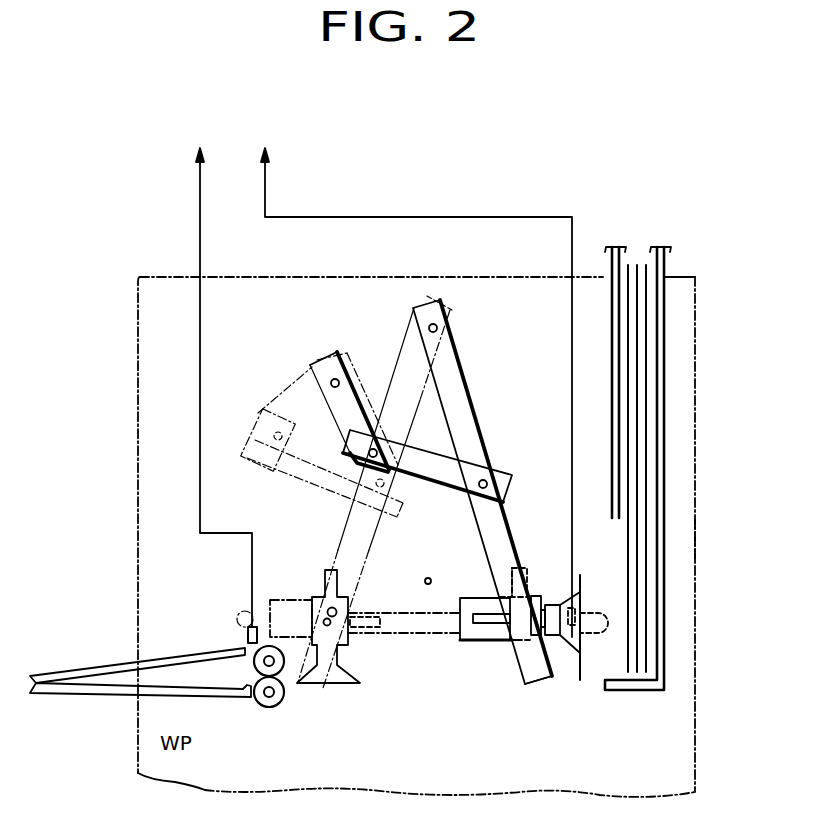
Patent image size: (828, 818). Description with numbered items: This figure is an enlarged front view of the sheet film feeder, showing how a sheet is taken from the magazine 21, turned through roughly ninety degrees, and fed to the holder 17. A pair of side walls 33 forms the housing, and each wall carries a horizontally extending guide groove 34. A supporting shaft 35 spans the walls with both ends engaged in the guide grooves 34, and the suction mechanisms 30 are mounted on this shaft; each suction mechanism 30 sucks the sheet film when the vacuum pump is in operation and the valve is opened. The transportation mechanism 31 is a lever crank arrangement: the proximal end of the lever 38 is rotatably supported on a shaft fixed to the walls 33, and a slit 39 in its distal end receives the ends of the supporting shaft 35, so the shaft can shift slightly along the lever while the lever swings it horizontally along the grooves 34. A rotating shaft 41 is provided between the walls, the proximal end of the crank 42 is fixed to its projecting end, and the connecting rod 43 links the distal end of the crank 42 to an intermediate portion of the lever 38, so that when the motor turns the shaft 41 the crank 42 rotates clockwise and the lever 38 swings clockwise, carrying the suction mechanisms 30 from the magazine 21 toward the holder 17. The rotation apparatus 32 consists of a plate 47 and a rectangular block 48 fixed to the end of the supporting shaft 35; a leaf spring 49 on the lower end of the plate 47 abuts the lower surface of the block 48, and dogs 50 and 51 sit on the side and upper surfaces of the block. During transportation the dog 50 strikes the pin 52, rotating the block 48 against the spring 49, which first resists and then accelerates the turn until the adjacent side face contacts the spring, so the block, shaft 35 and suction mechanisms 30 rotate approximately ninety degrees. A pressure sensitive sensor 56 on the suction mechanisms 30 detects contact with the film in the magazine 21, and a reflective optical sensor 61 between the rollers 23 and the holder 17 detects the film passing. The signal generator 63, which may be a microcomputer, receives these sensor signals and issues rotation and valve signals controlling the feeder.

The signal generator 63 is at (371, 370).
The magazine 21 is at (667, 355).
The side wall 33 is at (695, 515).
The lever 38 is at (476, 410).
The transportation mechanism 31 is at (478, 372).
The crank 42 is at (362, 404).
The rotating shaft 41 is at (333, 380).
The connecting rod 43 is at (433, 481).
The reflective optical sensor 61 is at (247, 634).
The guide groove 34 is at (428, 622).
The pin 52 is at (425, 581).
The plate 47 is at (482, 598).
The dog 51 is at (480, 624).
The leaf spring 49 is at (462, 641).
The rotation apparatus 32 is at (540, 564).
The dog 50 is at (527, 568).
The block 48 is at (536, 599).
The pressure sensitive sensor 56 is at (577, 614).
The suction mechanism 30 is at (578, 650).
The slit 39 is at (517, 648).
The supporting shaft 35 is at (530, 656).
The holder 17 is at (107, 664).
The rollers 23 is at (271, 708).